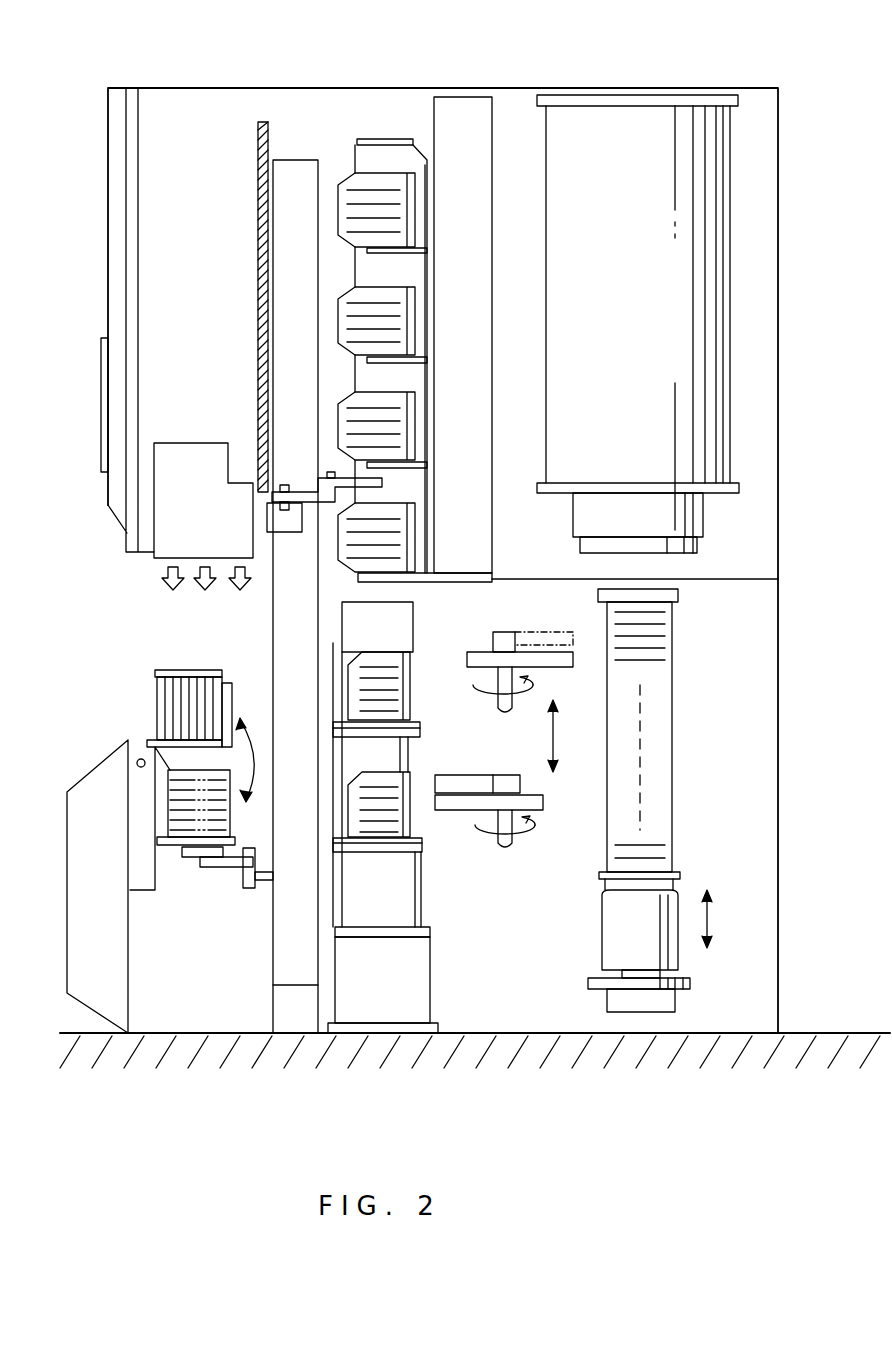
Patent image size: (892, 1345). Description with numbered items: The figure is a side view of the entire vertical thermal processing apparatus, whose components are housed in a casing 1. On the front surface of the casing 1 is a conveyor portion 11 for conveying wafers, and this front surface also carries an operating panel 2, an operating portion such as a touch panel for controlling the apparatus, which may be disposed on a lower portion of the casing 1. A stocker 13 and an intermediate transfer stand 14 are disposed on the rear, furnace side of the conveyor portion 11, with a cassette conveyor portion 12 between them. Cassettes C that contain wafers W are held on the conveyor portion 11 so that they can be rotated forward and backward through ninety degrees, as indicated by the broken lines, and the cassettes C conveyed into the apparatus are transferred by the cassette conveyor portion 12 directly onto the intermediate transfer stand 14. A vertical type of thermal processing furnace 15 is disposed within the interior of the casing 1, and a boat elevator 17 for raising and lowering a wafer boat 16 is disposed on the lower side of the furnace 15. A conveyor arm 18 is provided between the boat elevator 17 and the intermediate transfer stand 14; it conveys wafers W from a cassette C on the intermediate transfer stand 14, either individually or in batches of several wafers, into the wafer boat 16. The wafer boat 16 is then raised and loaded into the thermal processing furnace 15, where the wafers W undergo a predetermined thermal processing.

The casing 1 is at (215, 88).
The operating panel 2 is at (101, 380).
The conveyor portion 11 is at (150, 745).
The cassette conveyor portion 12 is at (248, 905).
The stocker 13 is at (378, 139).
The intermediate transfer stand 14 is at (413, 628).
The thermal processing furnace 15 is at (733, 263).
The wafer boat 16 is at (672, 757).
The boat elevator 17 is at (675, 1000).
The conveyor arm 18 is at (553, 658).
The wafer W is at (355, 190).
The cassette C is at (415, 315).